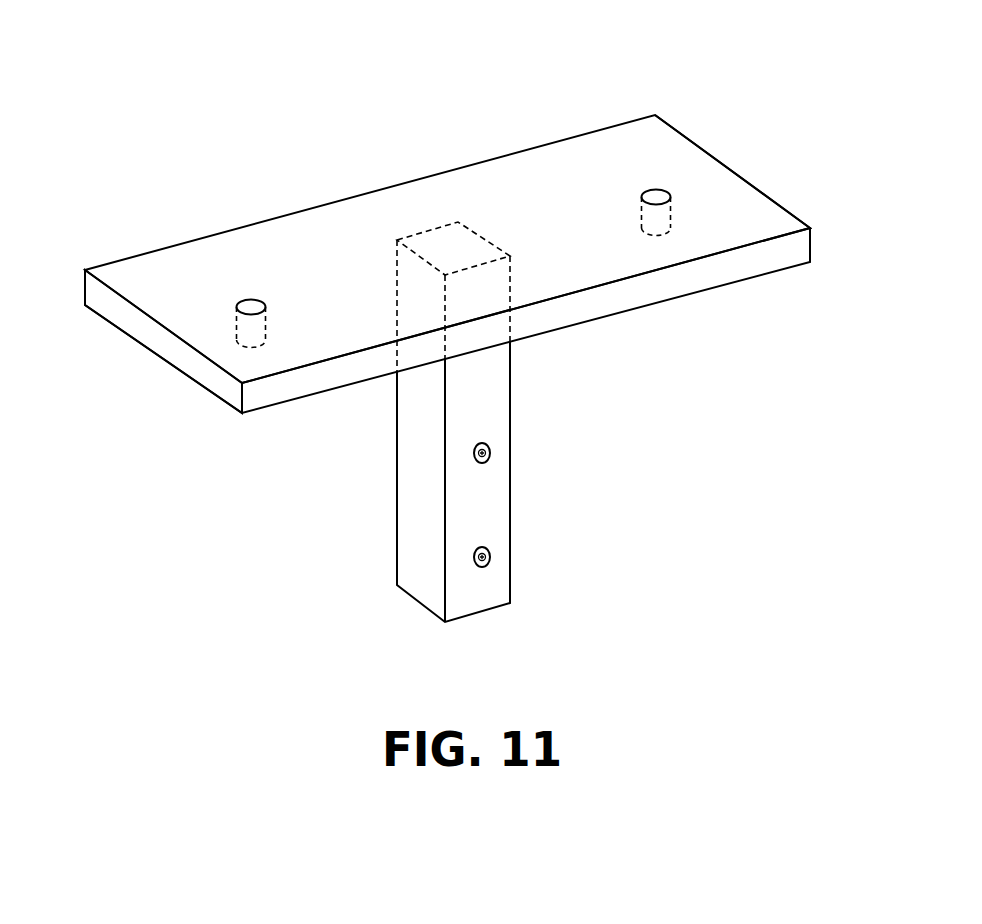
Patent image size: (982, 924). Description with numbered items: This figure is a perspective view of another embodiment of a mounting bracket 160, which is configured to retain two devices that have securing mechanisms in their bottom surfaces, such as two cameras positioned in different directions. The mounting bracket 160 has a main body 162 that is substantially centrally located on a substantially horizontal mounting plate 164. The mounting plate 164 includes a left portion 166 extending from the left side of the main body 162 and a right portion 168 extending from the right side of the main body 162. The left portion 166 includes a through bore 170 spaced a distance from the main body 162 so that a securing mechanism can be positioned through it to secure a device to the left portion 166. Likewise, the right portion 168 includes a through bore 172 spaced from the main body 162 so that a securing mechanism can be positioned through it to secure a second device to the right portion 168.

The mounting bracket 160 is at (357, 563).
The main body 162 is at (512, 507).
The mounting plate 164 is at (511, 152).
The left portion 166 is at (167, 307).
The right portion 168 is at (712, 190).
The through bore 170 is at (249, 298).
The through bore 172 is at (657, 189).